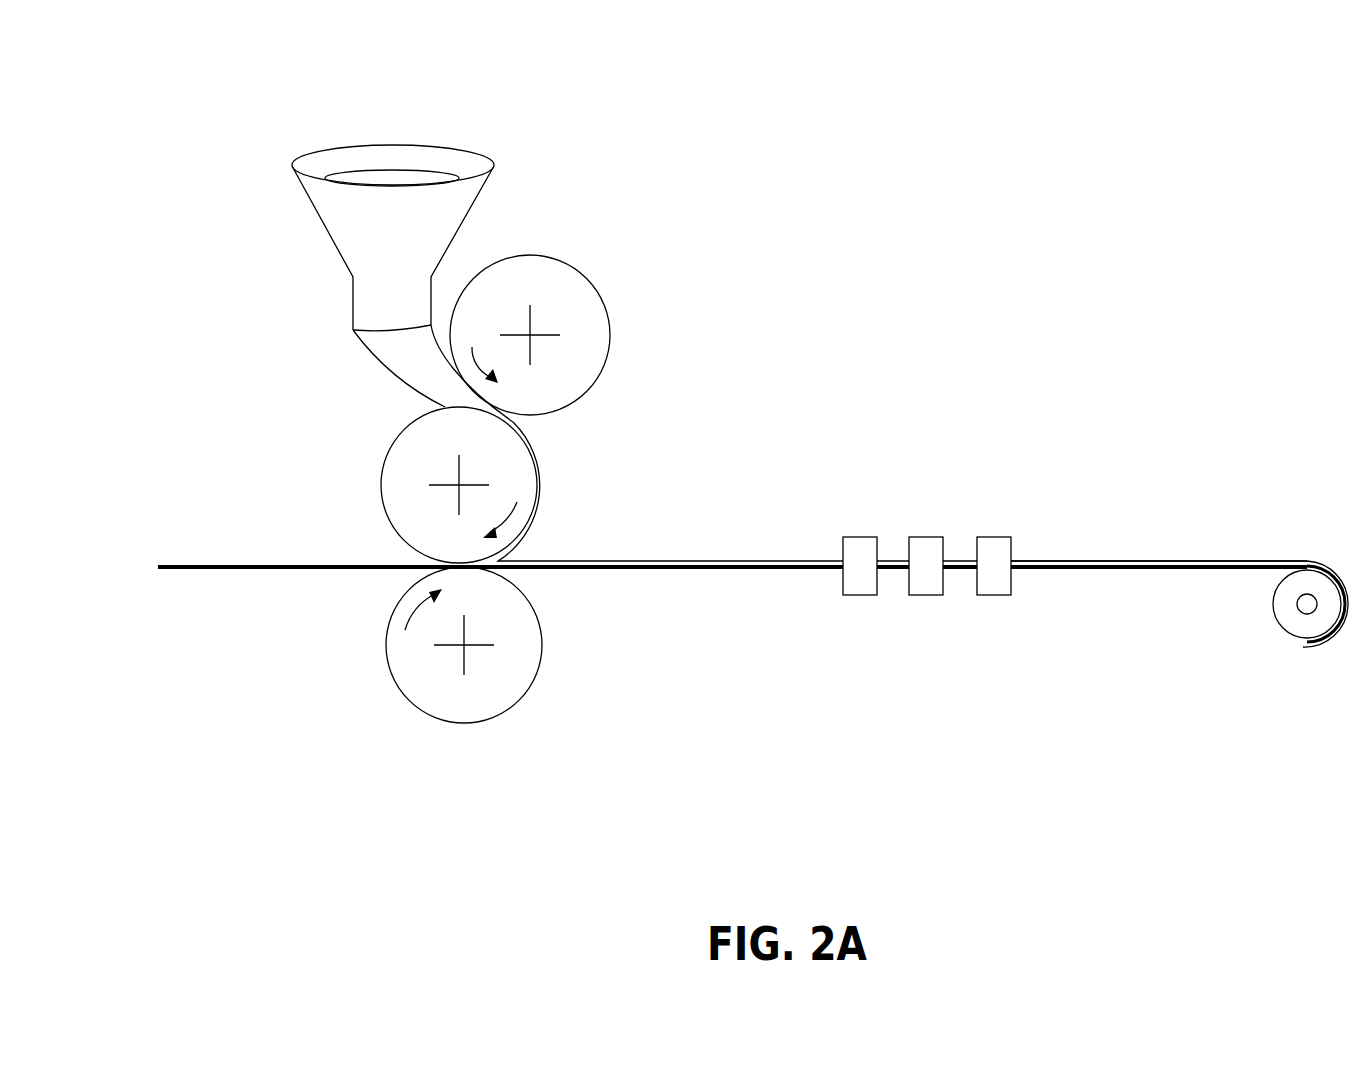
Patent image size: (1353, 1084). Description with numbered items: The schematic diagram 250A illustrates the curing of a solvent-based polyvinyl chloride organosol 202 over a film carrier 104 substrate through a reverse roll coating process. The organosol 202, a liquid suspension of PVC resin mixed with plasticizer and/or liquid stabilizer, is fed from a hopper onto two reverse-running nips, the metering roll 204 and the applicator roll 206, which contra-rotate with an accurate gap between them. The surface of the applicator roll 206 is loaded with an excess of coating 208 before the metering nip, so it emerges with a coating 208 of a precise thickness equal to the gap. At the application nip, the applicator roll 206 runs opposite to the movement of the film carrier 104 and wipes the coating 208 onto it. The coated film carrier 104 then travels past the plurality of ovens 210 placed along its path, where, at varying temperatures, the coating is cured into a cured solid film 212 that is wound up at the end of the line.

The film carrier 104 is at (1074, 600).
The solvent-based polyvinyl chloride organosol 202 is at (395, 178).
The metering roll 204 is at (580, 308).
The applicator roll 206 is at (425, 438).
The coating 208 is at (660, 555).
The plurality of ovens 210 is at (992, 537).
The cured solid film 212 is at (1170, 561).
The schematic diagram 250A is at (1108, 760).